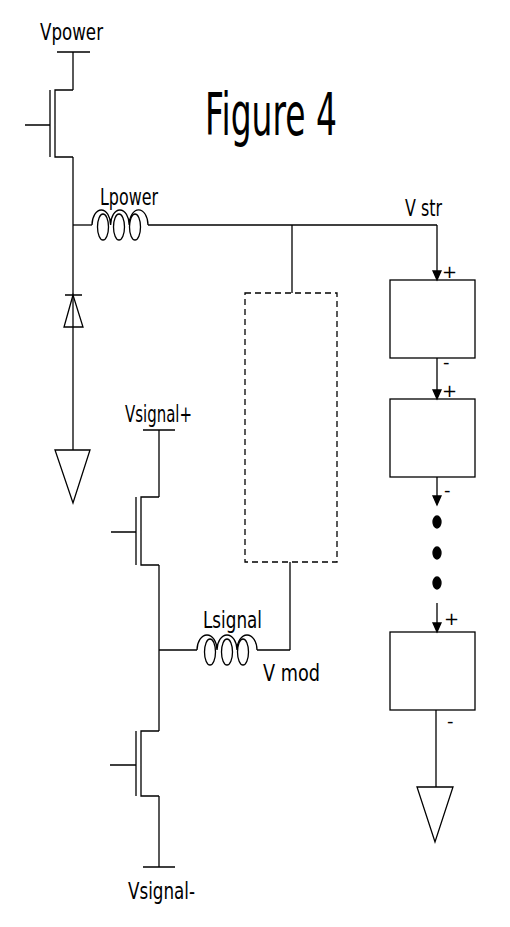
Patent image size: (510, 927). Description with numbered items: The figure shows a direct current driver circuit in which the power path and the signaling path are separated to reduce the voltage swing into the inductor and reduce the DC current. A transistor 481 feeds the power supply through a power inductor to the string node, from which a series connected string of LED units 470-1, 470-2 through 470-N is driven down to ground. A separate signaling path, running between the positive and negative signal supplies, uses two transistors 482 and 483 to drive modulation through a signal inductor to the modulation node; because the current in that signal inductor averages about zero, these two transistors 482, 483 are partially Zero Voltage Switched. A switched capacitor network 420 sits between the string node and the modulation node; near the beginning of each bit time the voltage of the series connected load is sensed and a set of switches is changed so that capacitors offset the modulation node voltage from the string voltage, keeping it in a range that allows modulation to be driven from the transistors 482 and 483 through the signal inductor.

The power transistor 481 is at (63, 123).
The transistor 482 is at (150, 531).
The transistor 483 is at (149, 763).
The switched capacitor network 420 is at (291, 427).
The LED unit 1 470-1 is at (432, 319).
The LED unit 2 470-2 is at (432, 438).
The LED unit N 470-N is at (432, 671).